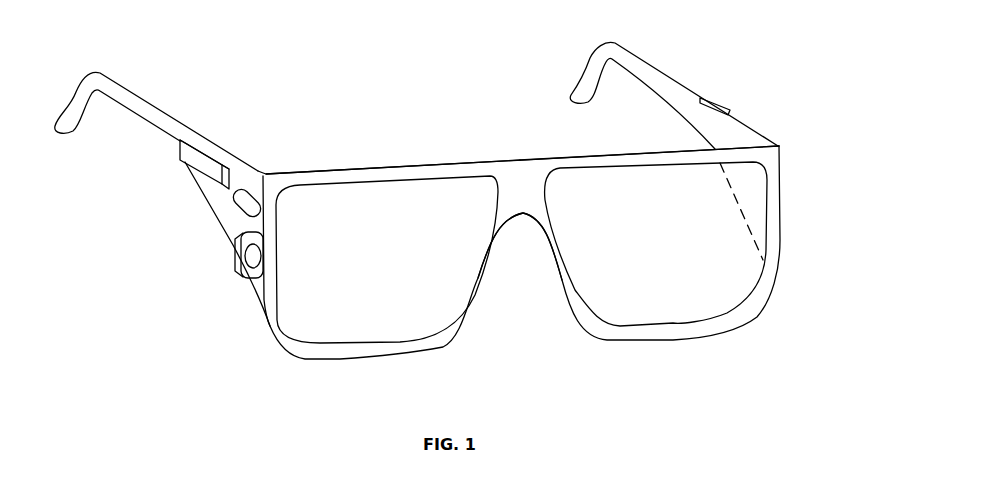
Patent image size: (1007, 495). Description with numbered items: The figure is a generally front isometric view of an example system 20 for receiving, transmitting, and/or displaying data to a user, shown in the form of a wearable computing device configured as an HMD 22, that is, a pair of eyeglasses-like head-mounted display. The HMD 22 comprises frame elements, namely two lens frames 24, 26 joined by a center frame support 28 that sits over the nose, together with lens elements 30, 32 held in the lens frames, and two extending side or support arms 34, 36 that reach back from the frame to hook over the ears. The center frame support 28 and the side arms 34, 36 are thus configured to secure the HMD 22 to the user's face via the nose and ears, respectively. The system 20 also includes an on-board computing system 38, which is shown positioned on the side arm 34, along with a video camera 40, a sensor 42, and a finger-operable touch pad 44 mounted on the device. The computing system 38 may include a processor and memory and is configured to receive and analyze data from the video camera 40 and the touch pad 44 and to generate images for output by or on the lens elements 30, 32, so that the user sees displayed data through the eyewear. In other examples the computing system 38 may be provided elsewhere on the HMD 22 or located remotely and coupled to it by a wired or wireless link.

The system 20 is at (780, 310).
The HMD 22 is at (395, 165).
The lens frame 24 is at (360, 175).
The lens frame 26 is at (598, 160).
The center frame support 28 is at (523, 183).
The lens element 30 is at (335, 323).
The lens element 32 is at (673, 307).
The side arm 34 is at (200, 142).
The side arm 36 is at (678, 85).
The on-board computing system 38 is at (197, 160).
The video camera 40 is at (238, 245).
The sensor 42 is at (718, 103).
The finger-operable touch pad 44 is at (233, 203).